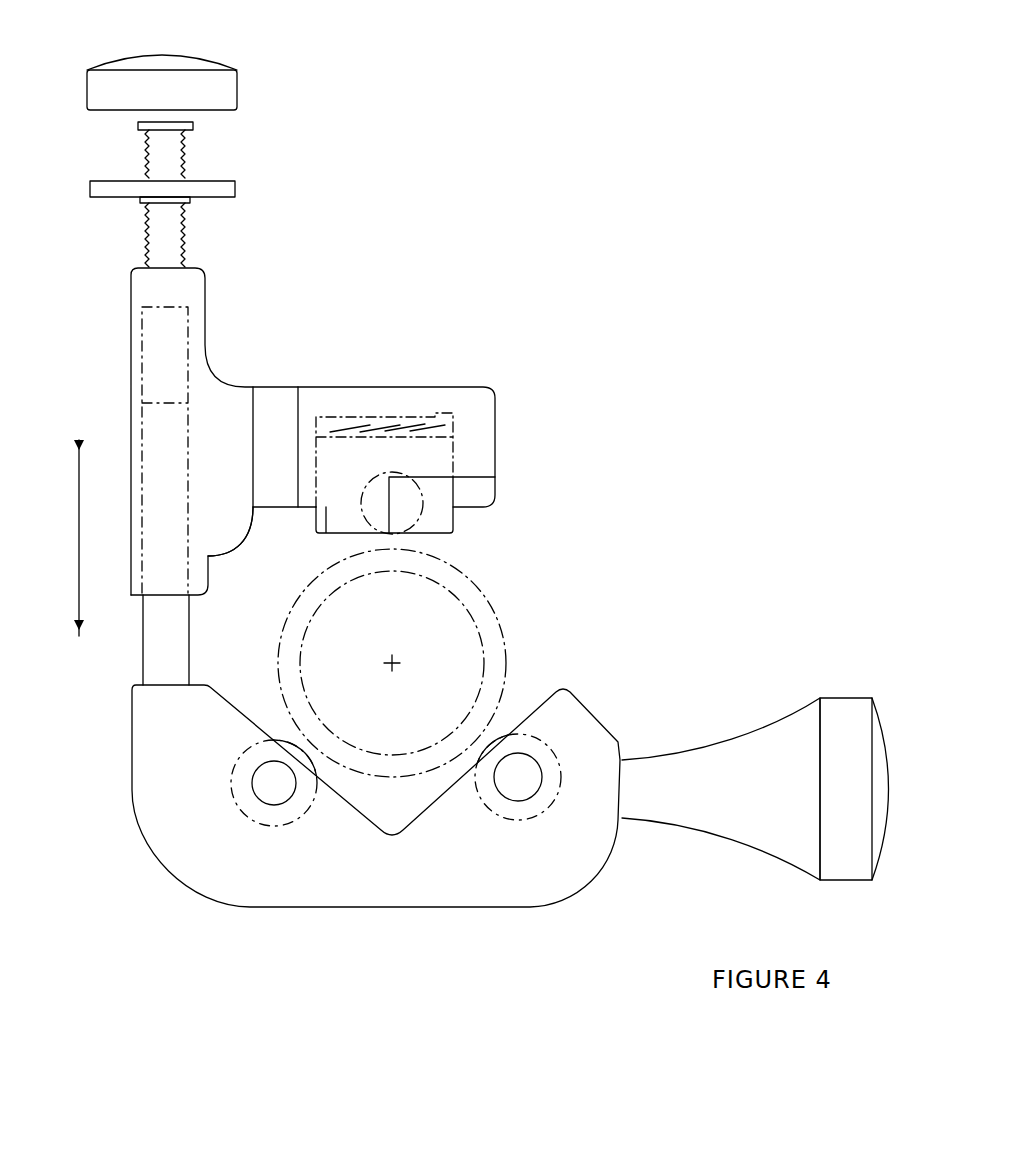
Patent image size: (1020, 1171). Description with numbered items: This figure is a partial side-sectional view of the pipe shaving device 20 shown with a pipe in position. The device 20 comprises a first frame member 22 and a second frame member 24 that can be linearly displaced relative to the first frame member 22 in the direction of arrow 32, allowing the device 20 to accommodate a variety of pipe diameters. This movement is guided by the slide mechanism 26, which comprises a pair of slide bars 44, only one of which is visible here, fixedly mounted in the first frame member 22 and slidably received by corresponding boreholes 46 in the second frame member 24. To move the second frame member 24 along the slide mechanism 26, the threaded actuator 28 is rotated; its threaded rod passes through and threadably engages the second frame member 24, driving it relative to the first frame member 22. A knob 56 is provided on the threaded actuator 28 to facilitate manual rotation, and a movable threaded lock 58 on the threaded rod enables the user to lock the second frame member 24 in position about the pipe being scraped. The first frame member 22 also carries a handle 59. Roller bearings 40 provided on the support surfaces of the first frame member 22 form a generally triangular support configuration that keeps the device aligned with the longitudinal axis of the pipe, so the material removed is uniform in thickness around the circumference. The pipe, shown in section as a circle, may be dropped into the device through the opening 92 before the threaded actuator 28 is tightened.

The pipe shaving device 20 is at (430, 252).
The first frame member 22 is at (332, 888).
The second frame member 24 is at (313, 434).
The slide mechanism 26 is at (205, 600).
The threaded actuator 28 is at (200, 135).
The arrow 32 is at (79, 572).
The roller bearings 40 is at (257, 814).
The slide bars 44 is at (156, 661).
The boreholes 46 is at (172, 338).
The knob 56 is at (197, 85).
The threaded lock 58 is at (235, 189).
The handle 59 is at (782, 735).
The opening 92 is at (562, 580).